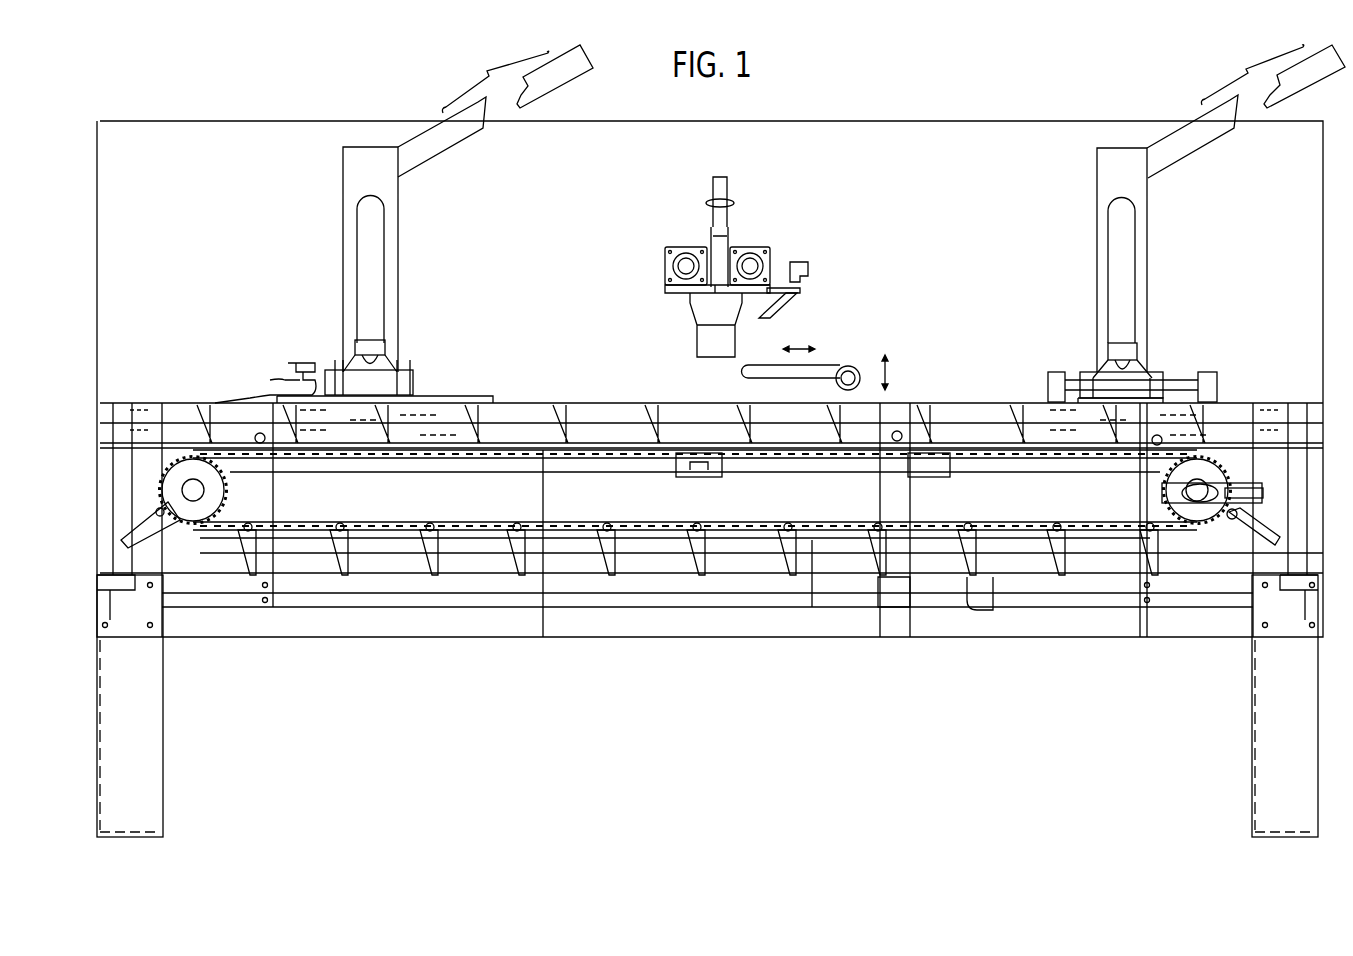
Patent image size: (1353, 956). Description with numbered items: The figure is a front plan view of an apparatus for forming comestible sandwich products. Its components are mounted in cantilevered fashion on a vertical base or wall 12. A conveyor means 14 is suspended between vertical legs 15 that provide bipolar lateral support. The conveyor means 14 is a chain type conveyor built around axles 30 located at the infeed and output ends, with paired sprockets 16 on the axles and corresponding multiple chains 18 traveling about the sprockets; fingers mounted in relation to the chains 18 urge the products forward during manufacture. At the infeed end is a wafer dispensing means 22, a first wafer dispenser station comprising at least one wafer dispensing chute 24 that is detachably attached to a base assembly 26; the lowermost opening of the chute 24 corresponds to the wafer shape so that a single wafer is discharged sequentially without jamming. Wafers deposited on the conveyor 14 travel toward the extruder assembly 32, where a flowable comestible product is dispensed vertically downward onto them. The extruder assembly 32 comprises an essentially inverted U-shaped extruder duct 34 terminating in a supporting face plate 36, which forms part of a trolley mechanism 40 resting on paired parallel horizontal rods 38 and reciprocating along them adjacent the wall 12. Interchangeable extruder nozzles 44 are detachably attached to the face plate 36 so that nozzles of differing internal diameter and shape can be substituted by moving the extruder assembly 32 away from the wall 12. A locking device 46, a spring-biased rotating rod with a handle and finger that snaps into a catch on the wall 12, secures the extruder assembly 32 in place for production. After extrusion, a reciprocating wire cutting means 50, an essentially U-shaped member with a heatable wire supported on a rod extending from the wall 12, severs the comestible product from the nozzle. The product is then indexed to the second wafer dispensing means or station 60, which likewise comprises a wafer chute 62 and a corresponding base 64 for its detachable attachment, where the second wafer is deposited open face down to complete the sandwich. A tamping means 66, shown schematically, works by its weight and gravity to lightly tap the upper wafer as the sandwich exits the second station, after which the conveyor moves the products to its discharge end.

The vertical base or wall 12 is at (118, 291).
The conveyor means 14 is at (1190, 530).
The vertical legs 15 is at (118, 721).
The paired sprockets 16 is at (197, 520).
The multiple chains 18 is at (165, 536).
The wafer dispensing means 22 is at (1175, 352).
The wafer dispensing chute 24 is at (1145, 212).
The base assembly 26 is at (1168, 382).
The axles 30 is at (196, 492).
The extruder assembly 32 is at (790, 258).
The extruder duct 34 is at (727, 233).
The supporting face plate 36 is at (800, 290).
The paired parallel horizontal rods 38 is at (680, 262).
The trolley mechanism 40 is at (790, 252).
The extruder nozzles 44 is at (745, 313).
The locking device 46 is at (815, 268).
The wire cutting means 50 is at (838, 360).
The second wafer dispensing means or station 60 is at (411, 327).
The wafer chute 62 is at (400, 245).
The base 64 is at (412, 368).
The tamping means 66 is at (283, 362).